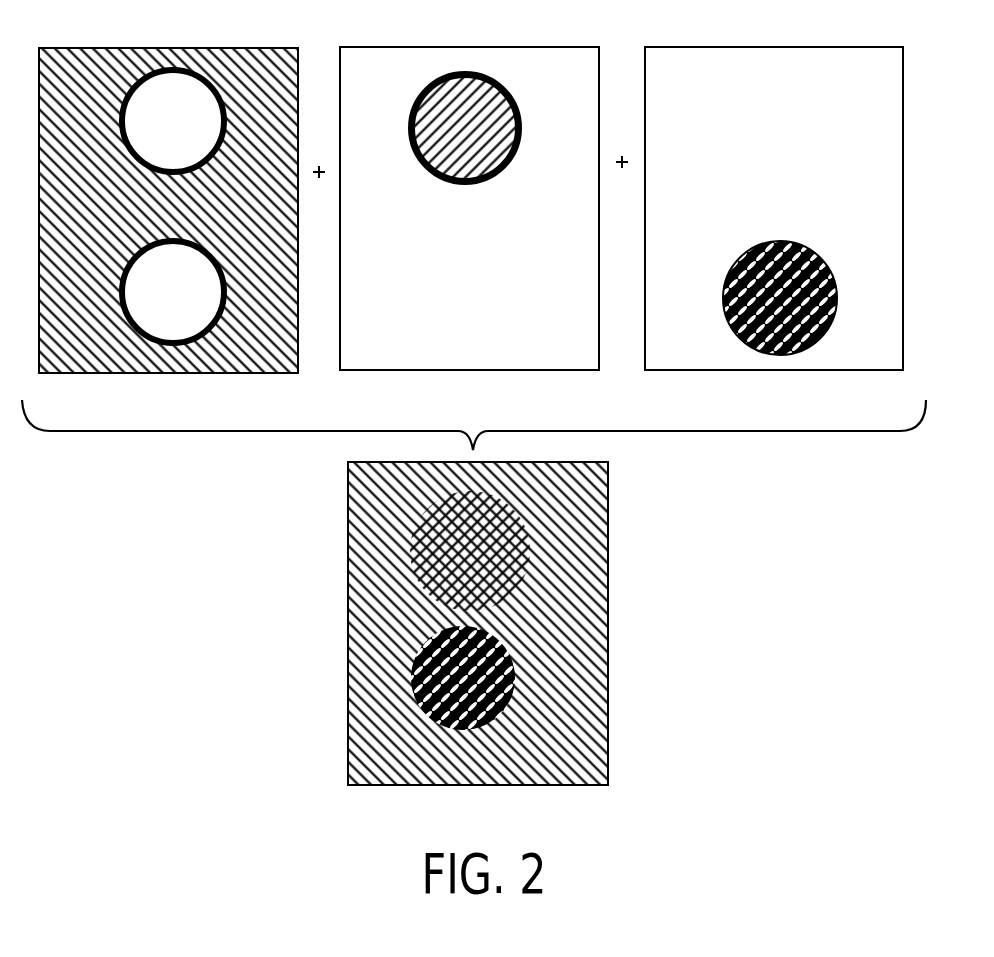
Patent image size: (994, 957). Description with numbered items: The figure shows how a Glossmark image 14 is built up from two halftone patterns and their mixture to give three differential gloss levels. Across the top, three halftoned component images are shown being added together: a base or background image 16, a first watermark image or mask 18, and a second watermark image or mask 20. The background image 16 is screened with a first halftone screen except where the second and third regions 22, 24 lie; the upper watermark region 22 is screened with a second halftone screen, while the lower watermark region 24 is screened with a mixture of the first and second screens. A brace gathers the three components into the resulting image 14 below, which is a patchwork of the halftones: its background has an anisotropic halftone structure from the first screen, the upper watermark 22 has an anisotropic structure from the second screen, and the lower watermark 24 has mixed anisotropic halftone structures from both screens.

The Glossmark image 14 is at (373, 623).
The base (background) image 16 is at (74, 362).
The first watermark image 18 is at (603, 57).
The second watermark image 20 is at (843, 382).
The second region 22 is at (160, 139).
The third region 24 is at (160, 310).